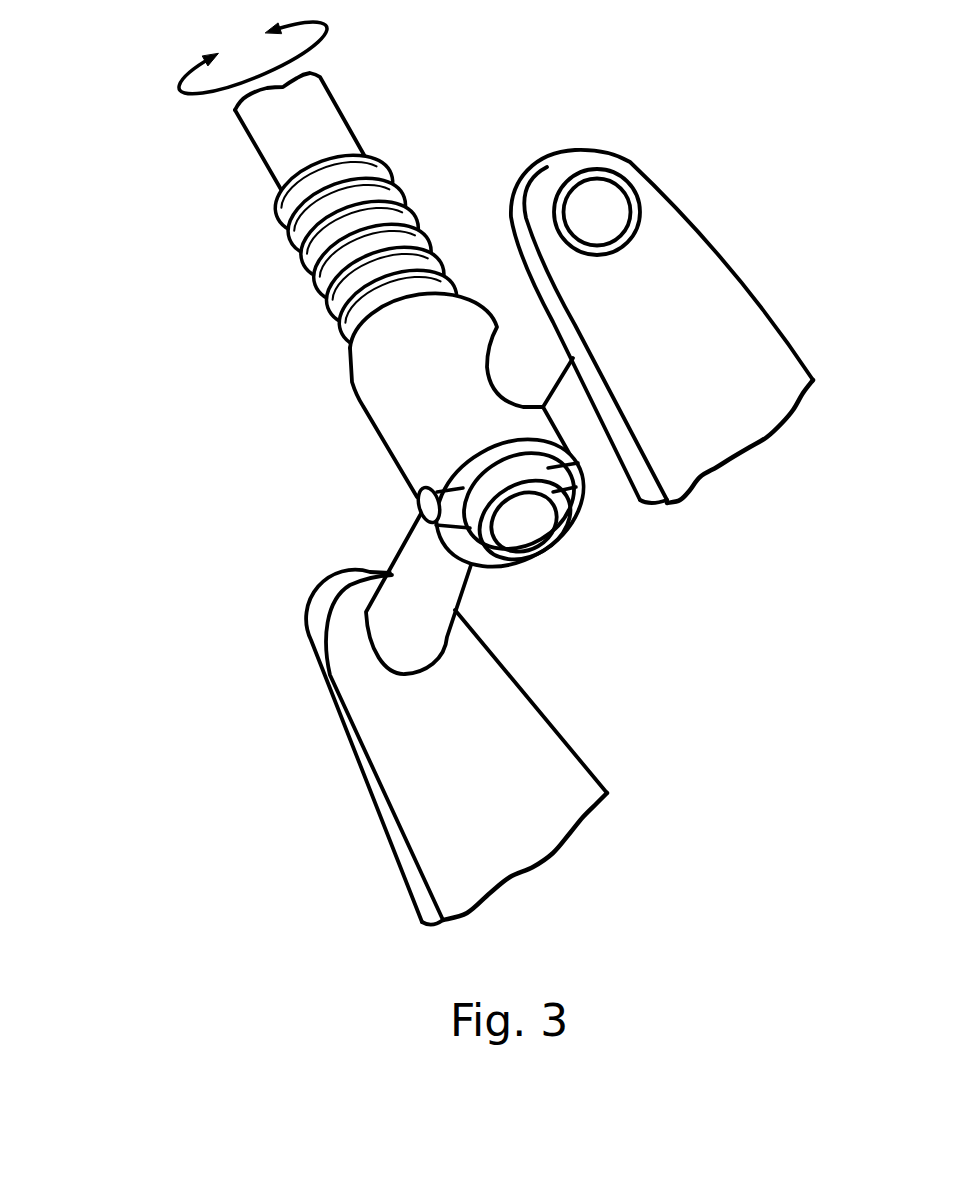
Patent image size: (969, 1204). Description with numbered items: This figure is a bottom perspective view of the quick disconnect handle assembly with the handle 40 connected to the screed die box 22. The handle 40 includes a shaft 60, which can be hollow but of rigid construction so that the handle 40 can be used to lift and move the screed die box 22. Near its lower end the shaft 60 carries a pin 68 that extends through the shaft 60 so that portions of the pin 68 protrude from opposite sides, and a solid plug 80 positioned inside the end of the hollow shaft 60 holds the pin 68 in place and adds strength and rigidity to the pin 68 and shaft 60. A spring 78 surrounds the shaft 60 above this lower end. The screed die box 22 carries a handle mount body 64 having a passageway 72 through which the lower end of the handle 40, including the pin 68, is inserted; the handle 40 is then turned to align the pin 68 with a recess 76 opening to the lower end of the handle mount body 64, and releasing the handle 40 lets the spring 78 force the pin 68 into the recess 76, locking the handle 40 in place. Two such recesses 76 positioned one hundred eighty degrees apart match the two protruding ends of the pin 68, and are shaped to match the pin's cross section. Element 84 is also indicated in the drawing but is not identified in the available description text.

The handle 40 is at (339, 348).
The shaft 60 is at (338, 112).
The spring 78 is at (327, 250).
The thread shoulder 84 is at (280, 216).
The handle mount body 64 is at (428, 359).
The passageway 72 is at (454, 529).
The recess 76 is at (418, 493).
The pin 68 is at (450, 508).
The solid plug 80 is at (540, 545).
The screed die box 22 is at (728, 268).